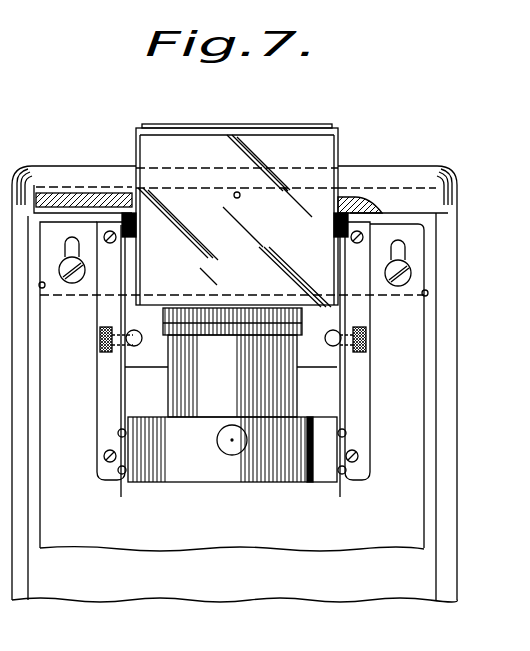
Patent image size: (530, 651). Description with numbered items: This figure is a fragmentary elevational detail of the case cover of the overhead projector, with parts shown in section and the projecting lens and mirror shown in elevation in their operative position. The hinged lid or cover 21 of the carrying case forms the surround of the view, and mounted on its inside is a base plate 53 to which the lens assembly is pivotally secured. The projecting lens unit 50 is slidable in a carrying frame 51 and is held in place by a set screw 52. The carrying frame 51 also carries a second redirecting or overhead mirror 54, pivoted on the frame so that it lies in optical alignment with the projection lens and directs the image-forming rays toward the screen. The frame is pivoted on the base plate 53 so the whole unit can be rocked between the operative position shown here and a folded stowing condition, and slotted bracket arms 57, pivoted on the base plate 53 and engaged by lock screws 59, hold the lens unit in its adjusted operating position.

The hinged lid or cover 21 is at (448, 333).
The projecting lens unit 50 is at (229, 379).
The carrying frame 51 is at (210, 473).
The set screw 52 is at (237, 452).
The base plate 53 is at (392, 519).
The overhead mirror 54 is at (300, 232).
The slotted bracket arms 57 is at (122, 378).
The lock screws 59 is at (100, 338).